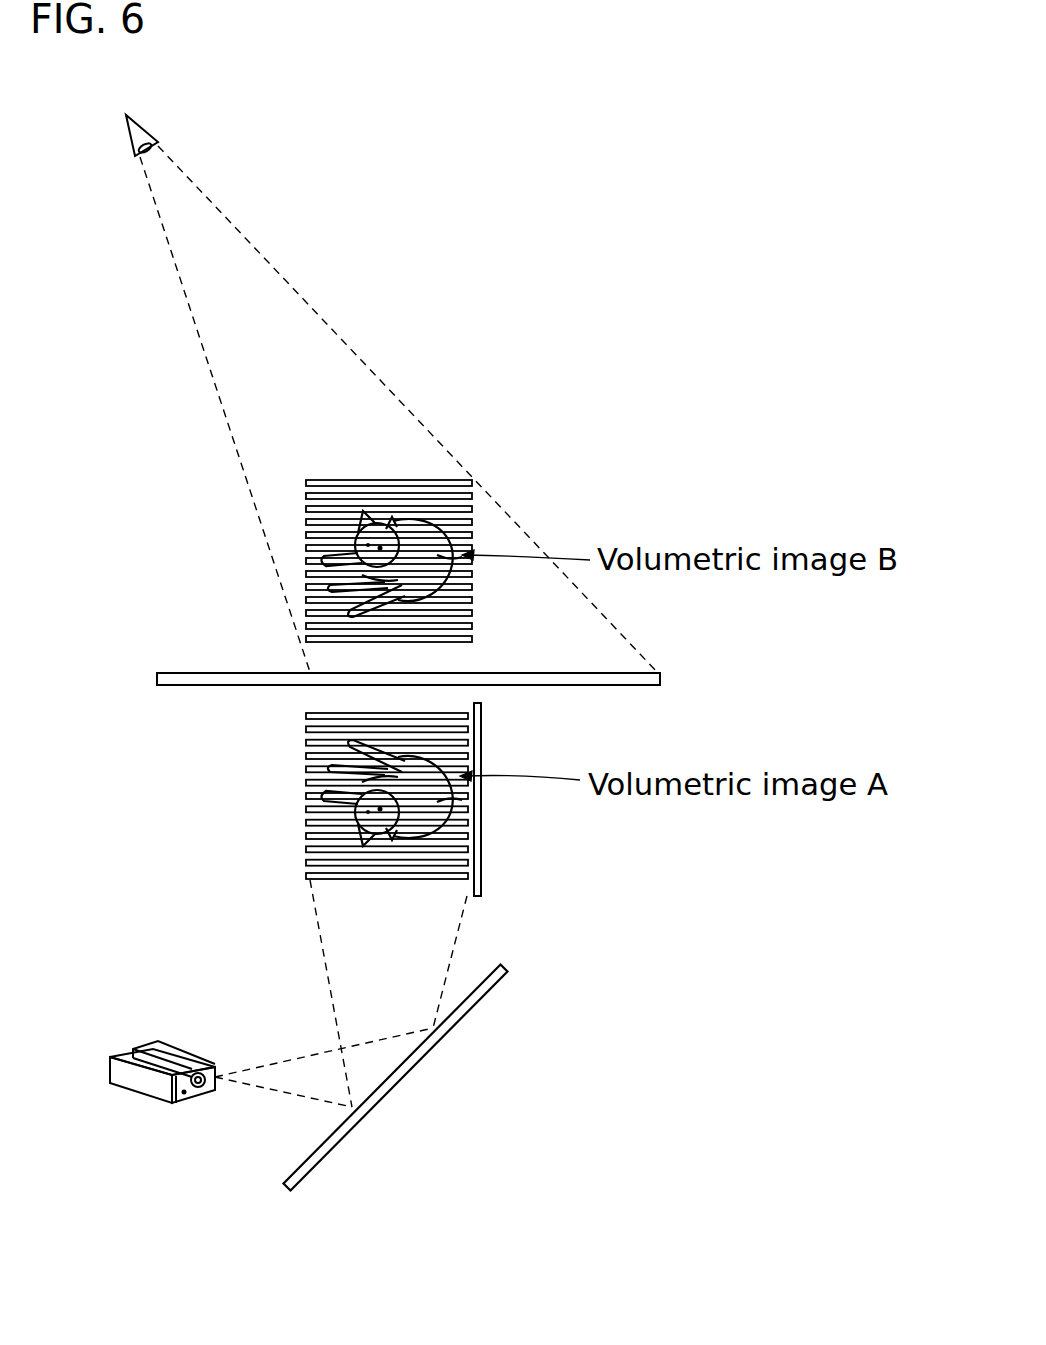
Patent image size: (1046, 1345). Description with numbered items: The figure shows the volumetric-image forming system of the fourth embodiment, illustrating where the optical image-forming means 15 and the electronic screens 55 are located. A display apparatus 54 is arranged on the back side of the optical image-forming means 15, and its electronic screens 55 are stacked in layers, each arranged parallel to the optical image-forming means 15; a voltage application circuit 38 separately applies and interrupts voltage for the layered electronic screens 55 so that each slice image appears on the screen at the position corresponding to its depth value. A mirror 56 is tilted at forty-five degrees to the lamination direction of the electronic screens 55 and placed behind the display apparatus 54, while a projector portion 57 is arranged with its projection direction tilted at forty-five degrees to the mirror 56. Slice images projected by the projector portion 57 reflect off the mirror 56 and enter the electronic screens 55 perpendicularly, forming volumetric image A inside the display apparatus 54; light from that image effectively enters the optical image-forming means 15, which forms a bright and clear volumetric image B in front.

The optical image-forming means 15 is at (660, 679).
The voltage application circuit 38 is at (477, 857).
The display apparatus 54 is at (517, 819).
The electronic screens 55 is at (306, 716).
The mirror 56 is at (487, 987).
The projector portion 57 is at (142, 1082).